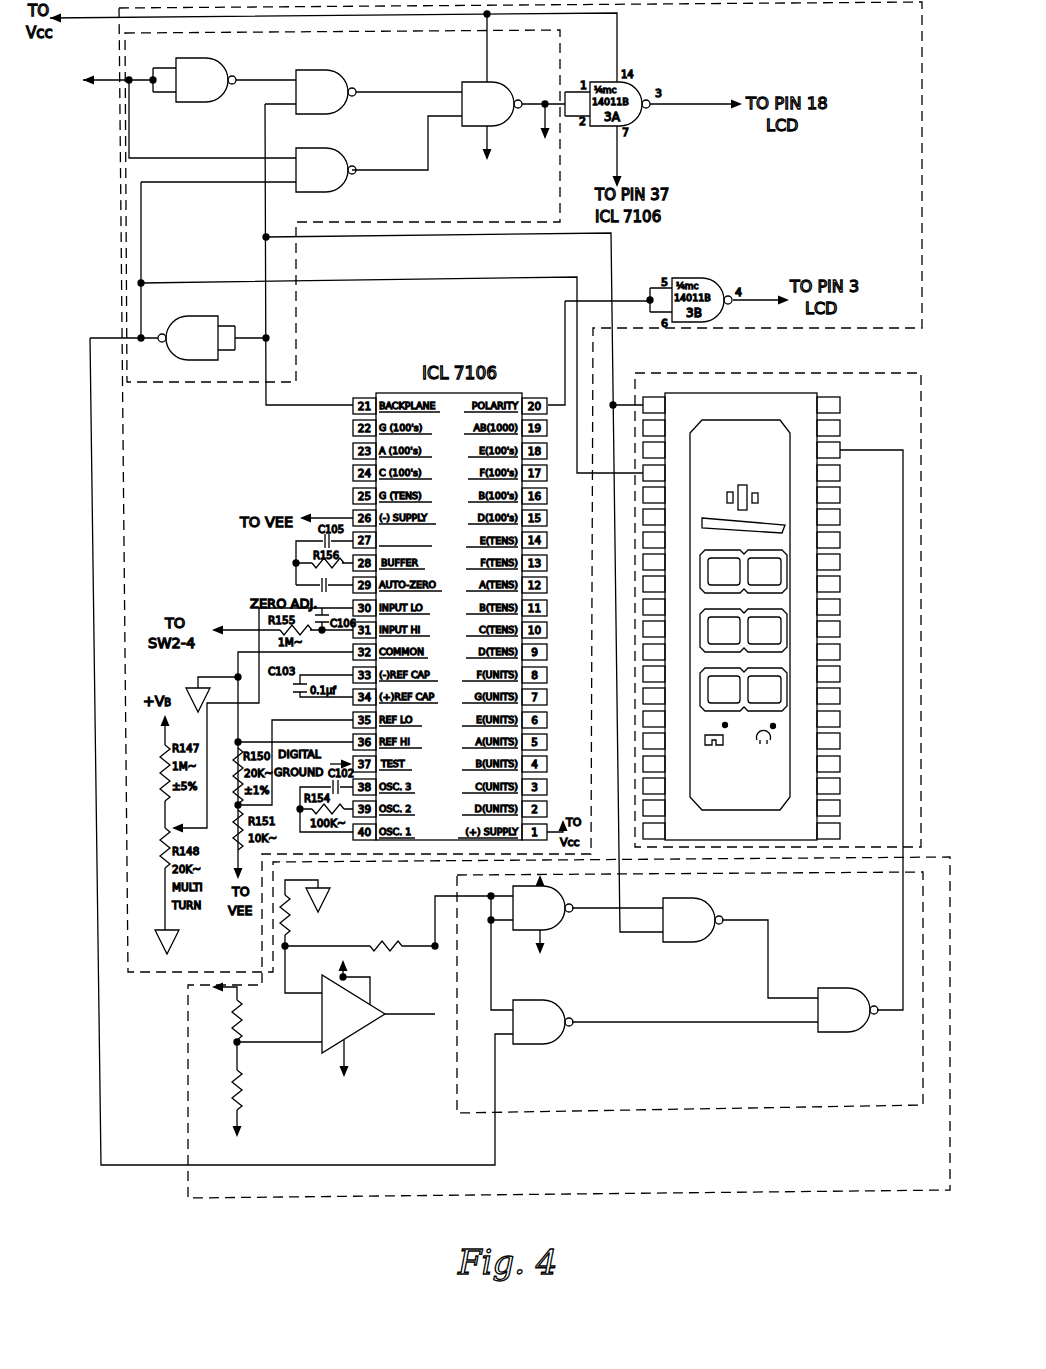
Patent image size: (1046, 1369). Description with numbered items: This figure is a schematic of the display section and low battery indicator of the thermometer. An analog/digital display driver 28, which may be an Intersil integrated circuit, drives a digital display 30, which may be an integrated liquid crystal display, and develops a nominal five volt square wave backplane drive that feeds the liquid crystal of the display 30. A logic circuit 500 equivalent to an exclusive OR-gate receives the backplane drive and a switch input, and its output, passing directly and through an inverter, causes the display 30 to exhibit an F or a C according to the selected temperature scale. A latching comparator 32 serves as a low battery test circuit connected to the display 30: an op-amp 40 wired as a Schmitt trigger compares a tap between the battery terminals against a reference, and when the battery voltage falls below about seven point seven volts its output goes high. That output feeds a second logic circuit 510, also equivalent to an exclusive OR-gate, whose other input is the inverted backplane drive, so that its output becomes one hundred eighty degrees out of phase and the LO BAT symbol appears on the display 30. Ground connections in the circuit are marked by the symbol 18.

The analog/digital display driver 28 is at (118, 184).
The logic circuit 500 is at (563, 58).
The digital display 30 is at (838, 372).
The latching comparator 32 is at (196, 1206).
The second logic circuit 510 is at (641, 1118).
The ground 18 is at (183, 946).
The op-amp 40 is at (362, 1028).